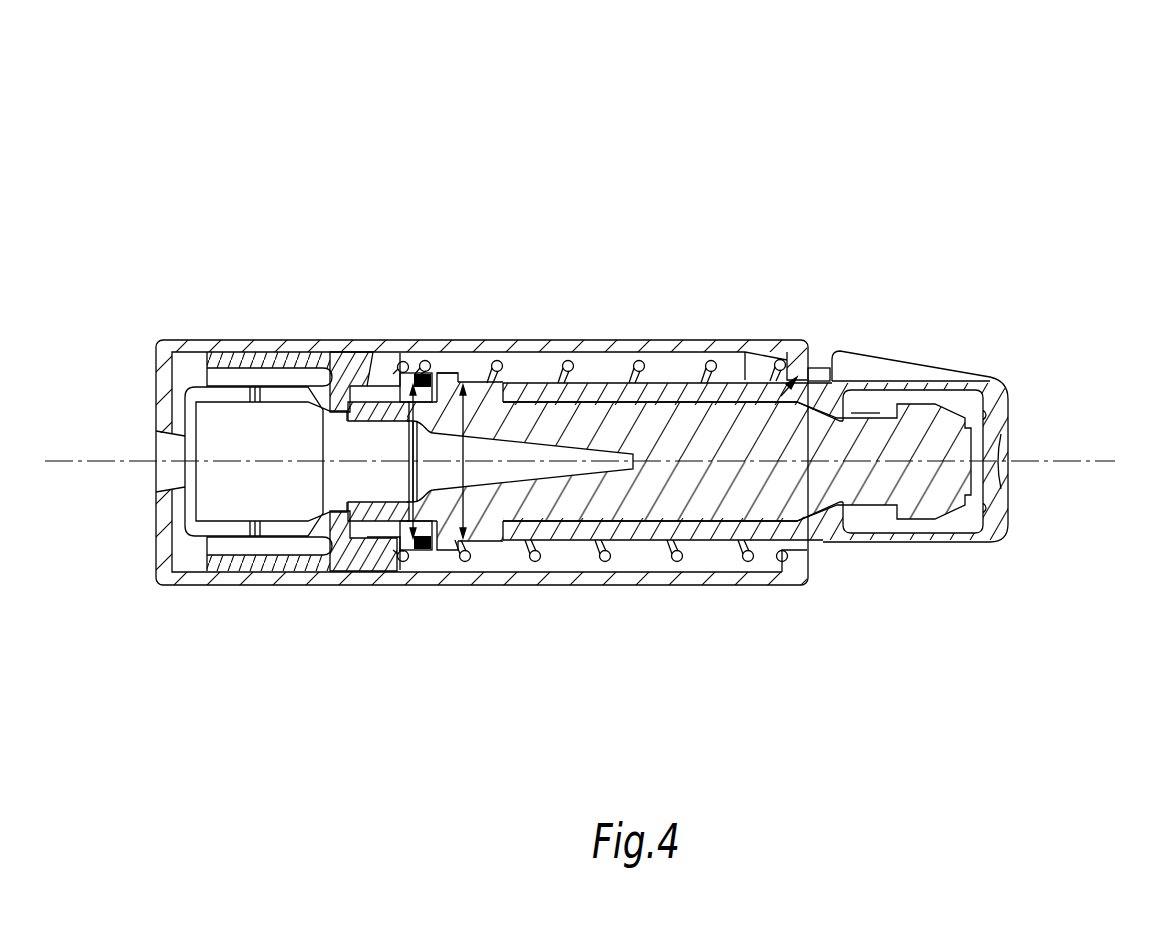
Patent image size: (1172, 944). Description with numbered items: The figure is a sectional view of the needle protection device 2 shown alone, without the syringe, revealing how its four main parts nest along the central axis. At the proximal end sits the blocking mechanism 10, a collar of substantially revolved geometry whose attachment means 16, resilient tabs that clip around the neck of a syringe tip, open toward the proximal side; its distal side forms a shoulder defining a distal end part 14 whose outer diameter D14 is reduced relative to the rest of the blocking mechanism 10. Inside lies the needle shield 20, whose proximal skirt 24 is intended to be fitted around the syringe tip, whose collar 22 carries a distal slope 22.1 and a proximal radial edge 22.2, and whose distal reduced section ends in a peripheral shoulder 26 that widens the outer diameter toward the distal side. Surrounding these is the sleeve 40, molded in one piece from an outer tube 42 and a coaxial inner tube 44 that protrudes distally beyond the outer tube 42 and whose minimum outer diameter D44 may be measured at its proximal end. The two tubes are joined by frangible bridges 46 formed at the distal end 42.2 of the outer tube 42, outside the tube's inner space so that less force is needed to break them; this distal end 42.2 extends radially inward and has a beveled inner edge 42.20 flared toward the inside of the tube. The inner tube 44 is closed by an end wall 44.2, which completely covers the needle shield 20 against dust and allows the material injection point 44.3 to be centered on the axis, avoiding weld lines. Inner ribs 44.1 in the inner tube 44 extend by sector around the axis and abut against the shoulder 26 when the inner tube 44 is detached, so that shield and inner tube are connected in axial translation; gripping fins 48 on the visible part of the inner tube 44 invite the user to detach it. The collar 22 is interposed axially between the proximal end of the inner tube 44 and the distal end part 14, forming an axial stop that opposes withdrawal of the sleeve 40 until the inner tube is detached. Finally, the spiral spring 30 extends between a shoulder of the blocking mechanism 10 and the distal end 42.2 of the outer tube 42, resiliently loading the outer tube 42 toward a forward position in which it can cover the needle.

The needle protection device 2 is at (228, 114).
The blocking mechanism 10 is at (352, 555).
The distal end part 14 is at (417, 542).
The attachment means 16 is at (272, 388).
The needle shield 20 is at (676, 428).
The collar 22 is at (442, 374).
The slope 22.1 is at (478, 362).
The radial edge 22.2 is at (370, 383).
The skirt 24 is at (382, 408).
The peripheral shoulder 26 is at (884, 413).
The spring 30 is at (561, 368).
The sleeve 40 is at (732, 690).
The outer tube 42 is at (622, 578).
The distal end 42.2 is at (798, 562).
The beveled inner edge 42.20 is at (767, 410).
The inner tube 44 is at (712, 541).
The inner ribs 44.1 is at (848, 522).
The end wall 44.2 is at (1012, 382).
The material injection point 44.3 is at (1022, 450).
The frangible bridges 46 is at (817, 366).
The fins 48 is at (852, 370).
The outer diameter of the distal end part D14 is at (462, 542).
The minimum outer diameter of the inner tube D44 is at (451, 461).